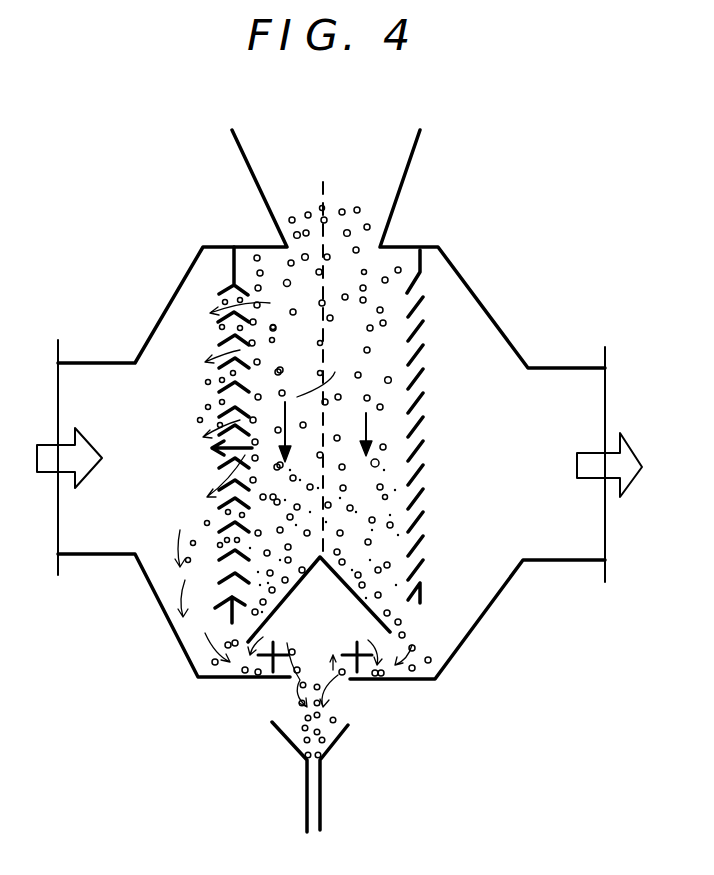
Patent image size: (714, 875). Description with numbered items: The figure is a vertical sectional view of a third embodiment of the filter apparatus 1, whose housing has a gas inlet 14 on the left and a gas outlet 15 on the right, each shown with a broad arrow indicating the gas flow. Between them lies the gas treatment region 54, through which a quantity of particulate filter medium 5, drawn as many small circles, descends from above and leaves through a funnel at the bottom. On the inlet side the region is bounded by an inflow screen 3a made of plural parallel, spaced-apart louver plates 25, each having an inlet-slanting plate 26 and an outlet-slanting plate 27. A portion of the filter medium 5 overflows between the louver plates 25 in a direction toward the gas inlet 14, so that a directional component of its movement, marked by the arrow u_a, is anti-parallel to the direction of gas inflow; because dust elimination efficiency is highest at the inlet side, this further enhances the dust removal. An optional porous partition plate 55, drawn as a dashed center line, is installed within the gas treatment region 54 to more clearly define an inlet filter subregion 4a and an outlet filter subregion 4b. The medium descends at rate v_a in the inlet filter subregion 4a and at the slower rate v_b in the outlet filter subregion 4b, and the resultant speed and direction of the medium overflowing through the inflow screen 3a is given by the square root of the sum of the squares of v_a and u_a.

The filter apparatus 1 is at (480, 300).
The gas inlet 14 is at (80, 554).
The gas outlet 15 is at (555, 560).
The louver plates 25 is at (220, 307).
The inlet-slanting plate 26 is at (213, 330).
The outlet-slanting plate 27 is at (253, 330).
The inflow screen 3a is at (232, 384).
The inlet filter subregion 4a is at (272, 410).
The outlet filter subregion 4b is at (390, 480).
The particulate filter medium 5 is at (200, 473).
The gas treatment region 54 is at (350, 365).
The porous partition plate 55 is at (323, 205).